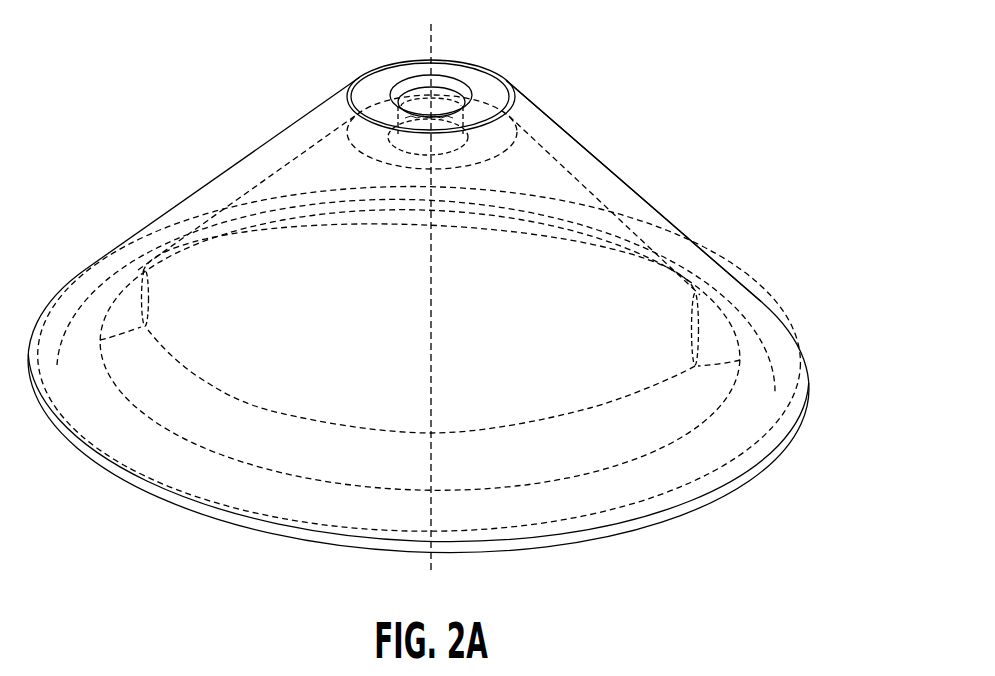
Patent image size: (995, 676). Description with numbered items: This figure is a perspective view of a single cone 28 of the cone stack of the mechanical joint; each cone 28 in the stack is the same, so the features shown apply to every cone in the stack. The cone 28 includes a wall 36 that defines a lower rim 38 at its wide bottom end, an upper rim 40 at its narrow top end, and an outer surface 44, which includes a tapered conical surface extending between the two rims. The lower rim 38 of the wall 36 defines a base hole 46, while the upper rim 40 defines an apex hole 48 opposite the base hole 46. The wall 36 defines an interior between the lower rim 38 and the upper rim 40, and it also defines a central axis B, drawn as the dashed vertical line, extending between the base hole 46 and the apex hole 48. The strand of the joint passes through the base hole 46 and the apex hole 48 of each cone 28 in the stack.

The cone 28 is at (170, 125).
The wall 36 is at (640, 223).
The lower rim 38 is at (765, 465).
The upper rim 40 is at (492, 86).
The outer surface 44 is at (600, 158).
The base hole 46 is at (693, 515).
The apex hole 48 is at (412, 82).